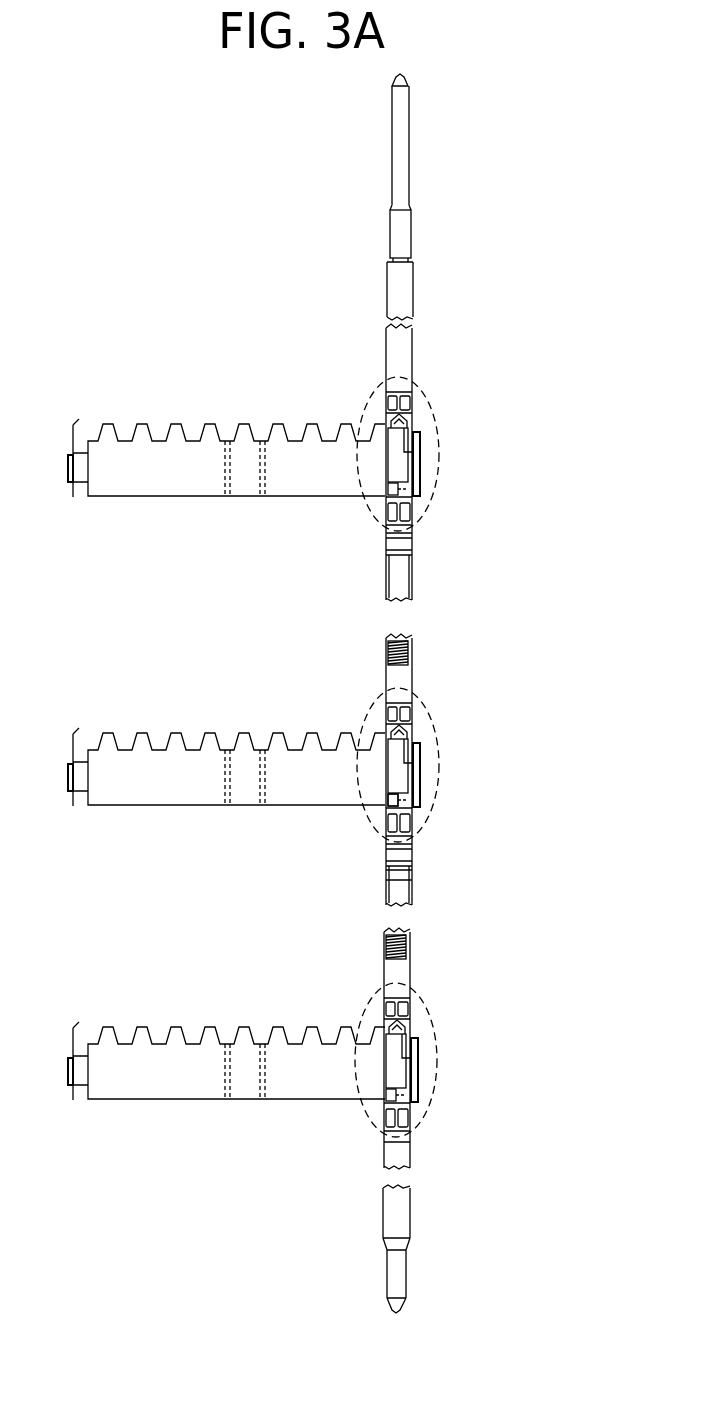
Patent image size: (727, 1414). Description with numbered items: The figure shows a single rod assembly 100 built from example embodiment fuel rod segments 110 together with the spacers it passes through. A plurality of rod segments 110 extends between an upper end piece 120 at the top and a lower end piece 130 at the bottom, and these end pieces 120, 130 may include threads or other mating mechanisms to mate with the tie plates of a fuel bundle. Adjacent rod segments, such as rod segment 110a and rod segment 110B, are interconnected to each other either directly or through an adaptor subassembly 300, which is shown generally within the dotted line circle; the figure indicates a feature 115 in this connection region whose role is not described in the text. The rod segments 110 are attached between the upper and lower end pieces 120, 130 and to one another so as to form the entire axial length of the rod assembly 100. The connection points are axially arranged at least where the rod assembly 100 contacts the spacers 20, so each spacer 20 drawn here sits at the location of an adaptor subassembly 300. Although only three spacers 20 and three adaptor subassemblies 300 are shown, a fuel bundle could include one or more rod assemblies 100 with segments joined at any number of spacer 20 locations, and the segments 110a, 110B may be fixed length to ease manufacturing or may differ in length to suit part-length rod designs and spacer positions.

The spacer 20 is at (182, 472).
The rod assembly 100 is at (566, 567).
The rod segment 110 is at (455, 746).
The rod segment 110B is at (412, 679).
The rod segment 110a is at (408, 862).
The latch member 115 is at (408, 807).
The upper end piece 120 is at (393, 145).
The lower end piece 130 is at (387, 1275).
The adaptor subassembly 300 is at (440, 446).